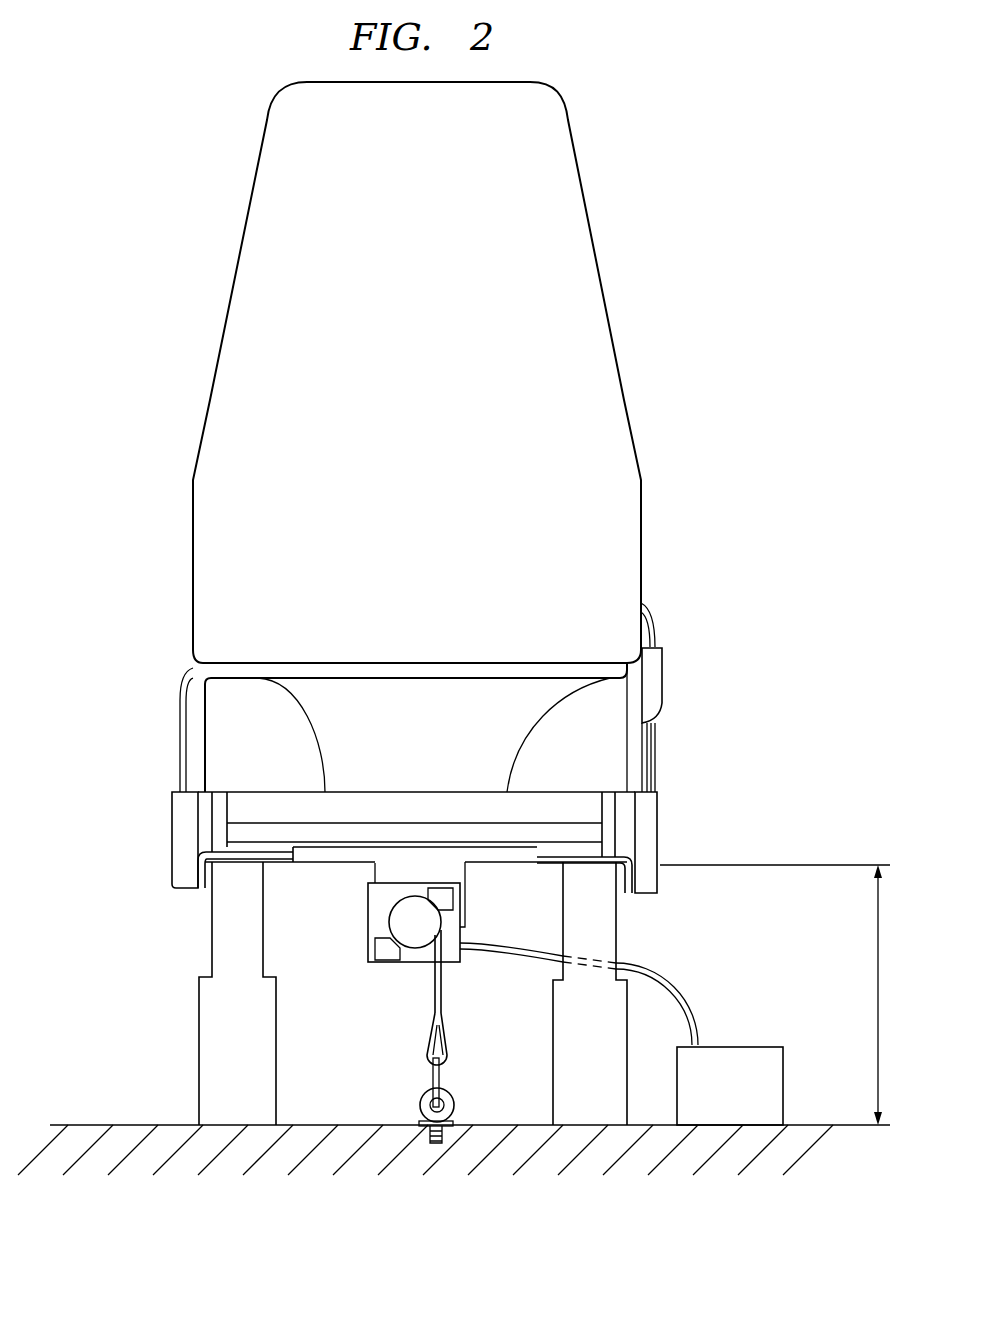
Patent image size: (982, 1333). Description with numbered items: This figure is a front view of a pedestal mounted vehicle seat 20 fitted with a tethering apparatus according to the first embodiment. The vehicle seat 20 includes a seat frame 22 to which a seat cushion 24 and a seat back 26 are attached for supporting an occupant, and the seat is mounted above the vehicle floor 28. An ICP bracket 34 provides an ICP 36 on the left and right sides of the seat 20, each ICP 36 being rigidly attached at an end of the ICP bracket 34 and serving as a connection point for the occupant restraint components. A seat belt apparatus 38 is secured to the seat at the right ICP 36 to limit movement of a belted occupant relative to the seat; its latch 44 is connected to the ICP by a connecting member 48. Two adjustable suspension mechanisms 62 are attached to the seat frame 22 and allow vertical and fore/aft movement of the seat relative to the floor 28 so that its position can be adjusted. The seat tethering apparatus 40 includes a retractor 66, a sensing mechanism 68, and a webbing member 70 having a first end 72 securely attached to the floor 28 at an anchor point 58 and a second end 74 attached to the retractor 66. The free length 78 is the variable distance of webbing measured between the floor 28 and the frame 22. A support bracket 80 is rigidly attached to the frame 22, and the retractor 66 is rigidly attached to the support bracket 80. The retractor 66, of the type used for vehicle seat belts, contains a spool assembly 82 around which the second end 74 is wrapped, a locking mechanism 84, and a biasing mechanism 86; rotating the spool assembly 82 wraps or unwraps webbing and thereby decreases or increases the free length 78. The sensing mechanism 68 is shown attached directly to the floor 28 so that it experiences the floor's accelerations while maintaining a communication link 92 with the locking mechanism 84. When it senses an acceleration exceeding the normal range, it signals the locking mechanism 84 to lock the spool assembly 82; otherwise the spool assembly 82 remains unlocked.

The vehicle seat 20 is at (184, 372).
The seat frame 22 is at (407, 800).
The seat cushion 24 is at (318, 677).
The seat back 26 is at (250, 212).
The vehicle floor 28 is at (137, 1123).
The ICP bracket 34 is at (583, 853).
The ICP 36 is at (172, 837).
The seat belt apparatus 38 is at (731, 788).
The seat tethering apparatus 40 is at (510, 1060).
The latch 44 is at (662, 675).
The connecting member 48 is at (642, 750).
The anchor point 58 is at (420, 1103).
The adjustable suspension mechanism 62 is at (192, 1001).
The retractor 66 is at (376, 978).
The sensing mechanism 68 is at (783, 1085).
The webbing member 70 is at (442, 1005).
The first end 72 is at (427, 1060).
The second end 74 is at (432, 950).
The free length 78 is at (775, 995).
The support bracket 80 is at (467, 877).
The spool assembly 82 is at (429, 936).
The locking mechanism 84 is at (453, 898).
The biasing mechanism 86 is at (375, 948).
The communication link 92 is at (703, 1005).